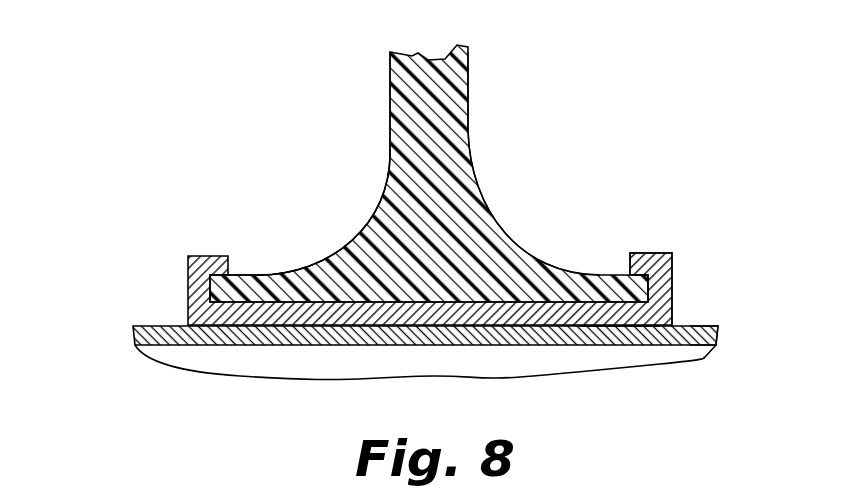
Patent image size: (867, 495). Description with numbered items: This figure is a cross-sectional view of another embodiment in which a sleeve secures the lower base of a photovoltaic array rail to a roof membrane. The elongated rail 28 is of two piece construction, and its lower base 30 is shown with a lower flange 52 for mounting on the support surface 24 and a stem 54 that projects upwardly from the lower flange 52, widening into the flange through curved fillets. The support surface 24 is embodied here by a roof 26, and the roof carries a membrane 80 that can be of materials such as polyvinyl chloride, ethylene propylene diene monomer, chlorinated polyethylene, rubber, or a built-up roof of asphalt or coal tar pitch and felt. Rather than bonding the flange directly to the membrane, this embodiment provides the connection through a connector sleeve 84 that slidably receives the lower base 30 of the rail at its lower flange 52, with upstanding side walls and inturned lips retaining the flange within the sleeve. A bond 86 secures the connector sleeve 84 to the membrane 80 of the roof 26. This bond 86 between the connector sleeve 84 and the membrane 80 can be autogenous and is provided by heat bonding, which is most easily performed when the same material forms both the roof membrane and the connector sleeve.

The support surface 24 is at (124, 328).
The roof 26 is at (720, 327).
The elongated rail 28 is at (514, 209).
The lower base 30 is at (382, 148).
The lower flange 52 is at (260, 275).
The stem 54 is at (470, 122).
The membrane 80 is at (170, 326).
The connector sleeve 84 is at (673, 272).
The bond 86 is at (614, 328).